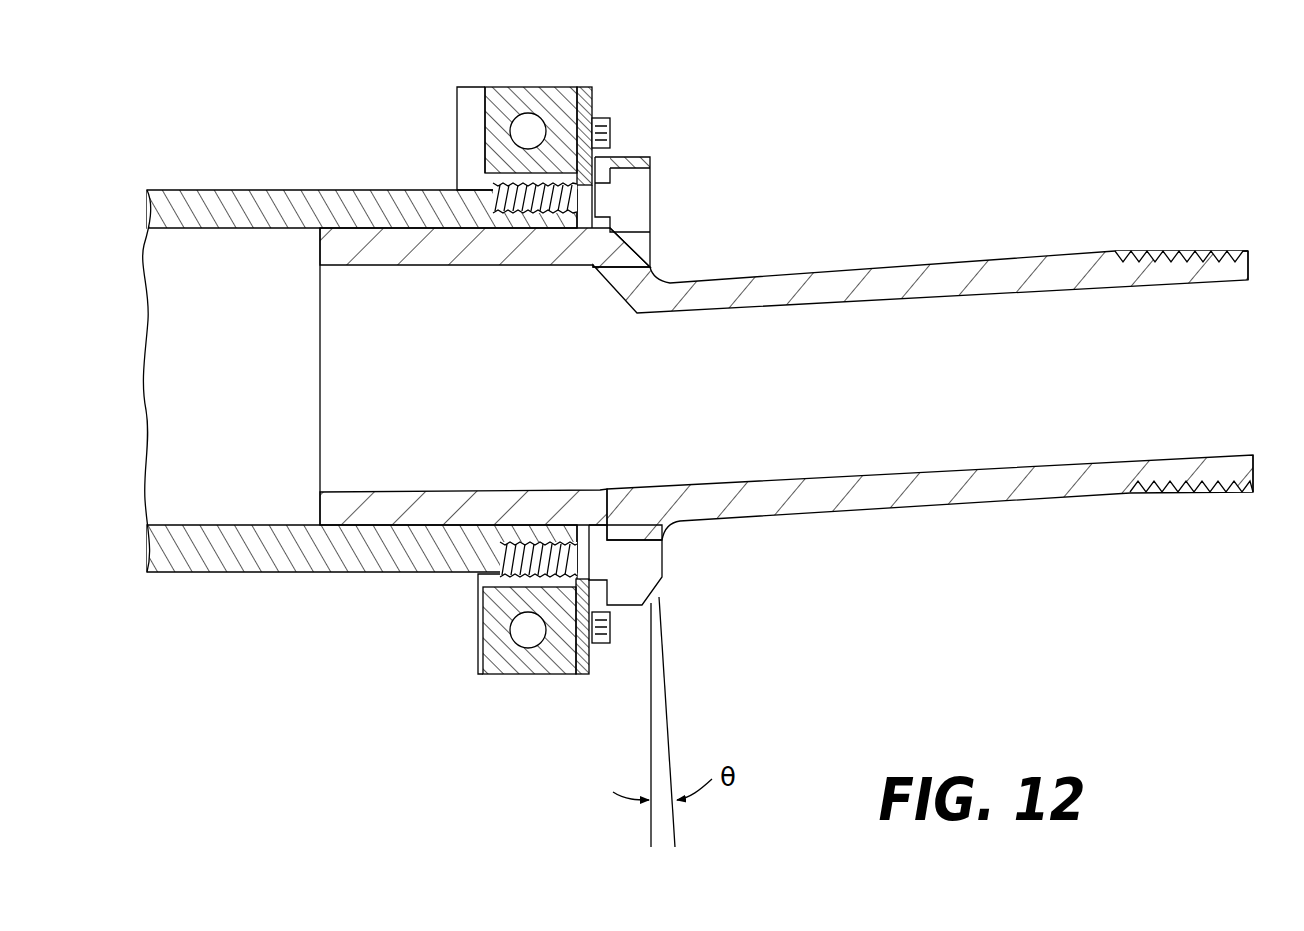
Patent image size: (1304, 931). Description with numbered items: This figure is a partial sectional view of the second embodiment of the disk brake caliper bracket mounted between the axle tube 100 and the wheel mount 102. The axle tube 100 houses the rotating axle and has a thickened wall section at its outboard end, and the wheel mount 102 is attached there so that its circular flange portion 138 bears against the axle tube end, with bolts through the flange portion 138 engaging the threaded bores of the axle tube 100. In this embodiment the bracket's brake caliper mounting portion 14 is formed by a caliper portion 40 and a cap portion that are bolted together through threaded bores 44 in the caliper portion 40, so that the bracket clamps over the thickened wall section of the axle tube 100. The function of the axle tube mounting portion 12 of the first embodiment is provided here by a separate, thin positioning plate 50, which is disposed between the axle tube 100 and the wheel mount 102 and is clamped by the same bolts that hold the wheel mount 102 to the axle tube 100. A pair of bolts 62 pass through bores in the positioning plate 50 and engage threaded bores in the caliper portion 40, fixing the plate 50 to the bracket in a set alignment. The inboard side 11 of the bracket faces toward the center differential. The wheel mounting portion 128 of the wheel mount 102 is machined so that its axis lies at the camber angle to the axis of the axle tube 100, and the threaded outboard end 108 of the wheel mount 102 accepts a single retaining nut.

The inboard side 11 is at (457, 128).
The axle tube mounting portion 12 is at (513, 87).
The brake caliper mounting portion 14 is at (477, 107).
The caliper portion 40 is at (505, 657).
The threaded bores 44 is at (545, 108).
The positioning plate 50 is at (590, 100).
The bolts 62 is at (612, 128).
The axle tube 100 is at (346, 188).
The wheel mount 102 is at (925, 351).
The outboard end 108 is at (1180, 249).
The wheel mounting portion 128 is at (940, 258).
The circular flange portion 138 is at (637, 157).